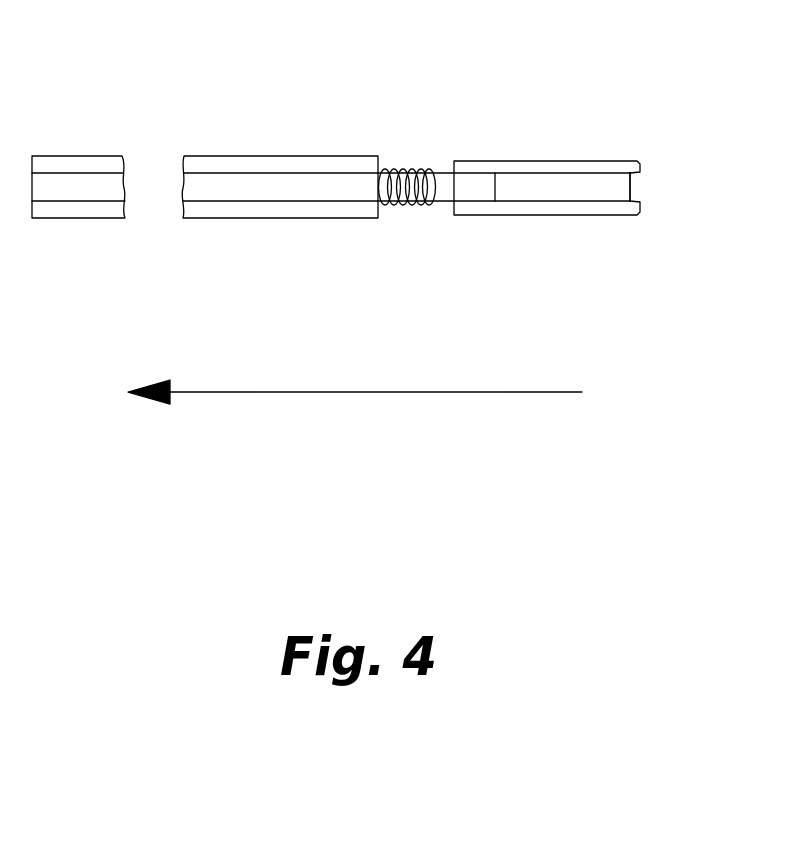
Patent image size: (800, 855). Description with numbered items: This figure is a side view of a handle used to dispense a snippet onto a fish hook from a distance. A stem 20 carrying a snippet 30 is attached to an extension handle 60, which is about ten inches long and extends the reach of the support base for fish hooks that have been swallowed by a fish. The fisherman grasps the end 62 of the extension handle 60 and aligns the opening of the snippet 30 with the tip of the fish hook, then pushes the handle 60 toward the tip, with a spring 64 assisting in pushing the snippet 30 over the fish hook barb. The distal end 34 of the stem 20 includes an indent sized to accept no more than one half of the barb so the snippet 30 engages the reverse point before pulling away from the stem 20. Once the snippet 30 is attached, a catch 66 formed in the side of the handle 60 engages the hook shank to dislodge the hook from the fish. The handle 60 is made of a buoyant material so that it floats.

The stem 20 is at (455, 185).
The snippet 30 is at (538, 149).
The distal end 34 is at (635, 185).
The extension handle 60 is at (220, 149).
The end 62 is at (68, 148).
The spring 64 is at (403, 149).
The catch 66 is at (385, 258).